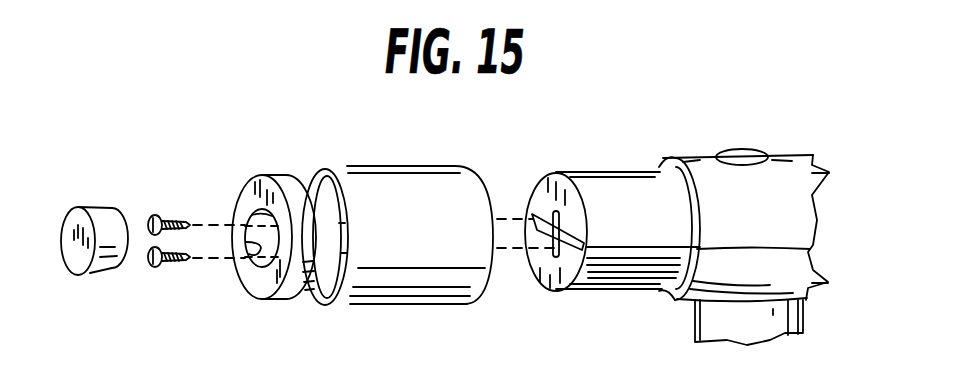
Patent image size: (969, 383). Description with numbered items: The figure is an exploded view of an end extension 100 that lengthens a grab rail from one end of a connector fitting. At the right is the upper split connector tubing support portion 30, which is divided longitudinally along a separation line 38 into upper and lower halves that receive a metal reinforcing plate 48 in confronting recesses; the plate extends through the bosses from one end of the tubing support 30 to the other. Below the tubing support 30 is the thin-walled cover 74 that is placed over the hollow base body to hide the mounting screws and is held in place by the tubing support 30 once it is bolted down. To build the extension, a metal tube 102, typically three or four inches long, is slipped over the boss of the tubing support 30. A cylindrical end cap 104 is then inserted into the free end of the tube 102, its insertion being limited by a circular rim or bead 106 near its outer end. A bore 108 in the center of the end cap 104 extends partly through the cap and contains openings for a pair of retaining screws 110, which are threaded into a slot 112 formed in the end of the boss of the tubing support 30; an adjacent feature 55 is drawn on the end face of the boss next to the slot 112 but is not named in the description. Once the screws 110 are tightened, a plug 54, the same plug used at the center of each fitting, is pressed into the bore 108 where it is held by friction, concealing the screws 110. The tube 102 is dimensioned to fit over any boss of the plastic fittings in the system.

The plug 54 is at (62, 222).
The retaining screws 110 is at (155, 252).
The end cap 104 is at (300, 178).
The end extension 100 is at (467, 145).
The bore 108 is at (250, 260).
The circular rim or bead 106 is at (288, 293).
The metal tube 102 is at (402, 255).
The upper split connector tubing support portion 30 is at (591, 223).
The metal reinforcing plate 48 is at (553, 289).
The separation line 38 is at (638, 248).
The slot 55 is at (592, 170).
The slot 112 is at (562, 212).
The cover 74 is at (718, 323).